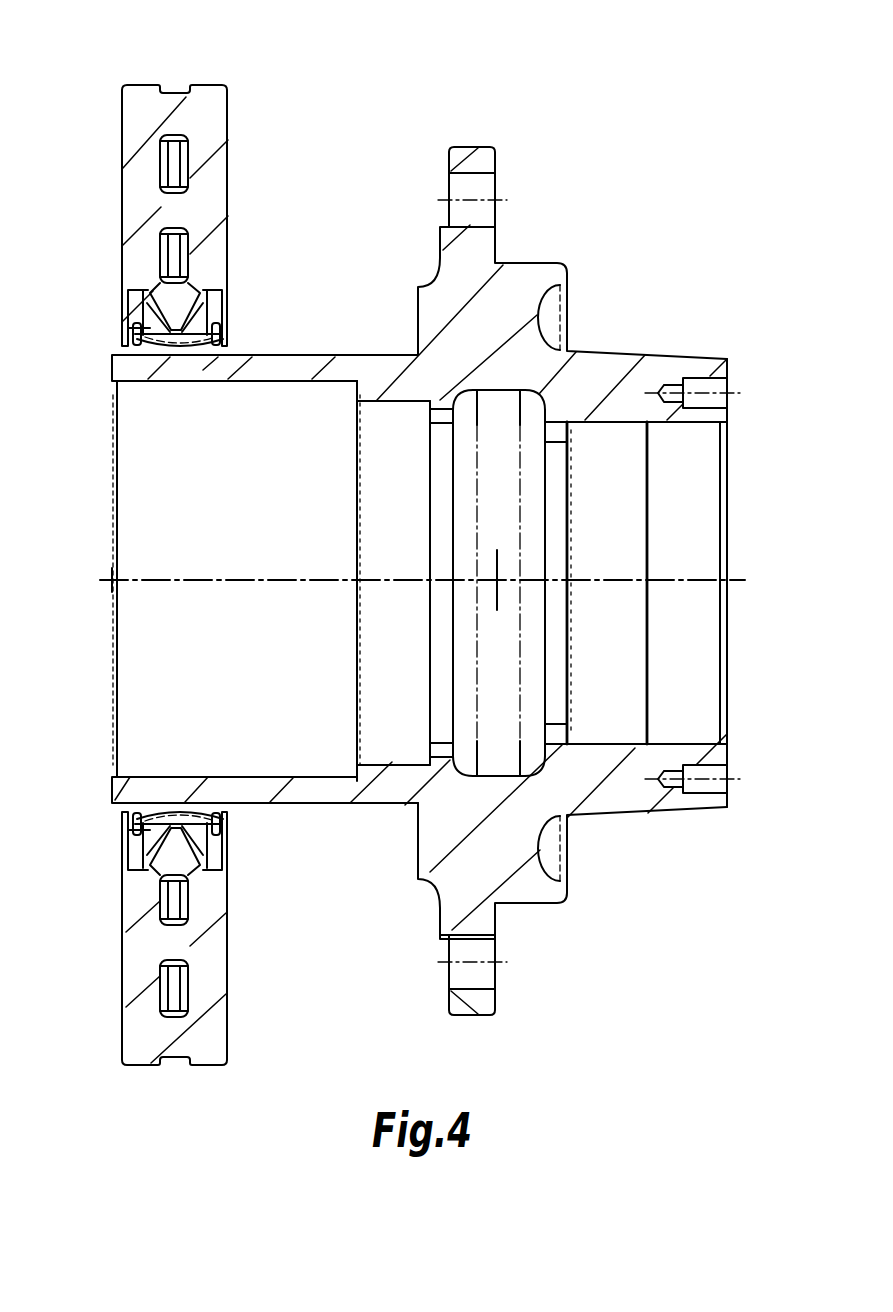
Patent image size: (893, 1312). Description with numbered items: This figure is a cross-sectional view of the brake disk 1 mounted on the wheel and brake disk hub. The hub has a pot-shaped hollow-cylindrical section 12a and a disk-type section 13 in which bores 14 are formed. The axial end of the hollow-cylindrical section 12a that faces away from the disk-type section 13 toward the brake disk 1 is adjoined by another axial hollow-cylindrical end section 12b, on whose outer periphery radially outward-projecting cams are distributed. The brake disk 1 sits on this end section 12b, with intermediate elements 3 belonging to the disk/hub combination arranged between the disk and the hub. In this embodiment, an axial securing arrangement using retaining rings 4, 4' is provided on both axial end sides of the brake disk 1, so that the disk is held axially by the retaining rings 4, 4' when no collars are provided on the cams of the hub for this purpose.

The brake disk 1 is at (207, 116).
The intermediate element 3 is at (222, 331).
The retaining ring 4 is at (102, 573).
The retaining ring 4' is at (221, 551).
The hollow-cylindrical section 12a is at (600, 377).
The axial hollow-cylindrical end section 12b is at (218, 356).
The disk-type section 13 is at (477, 158).
The bore 14 is at (478, 216).